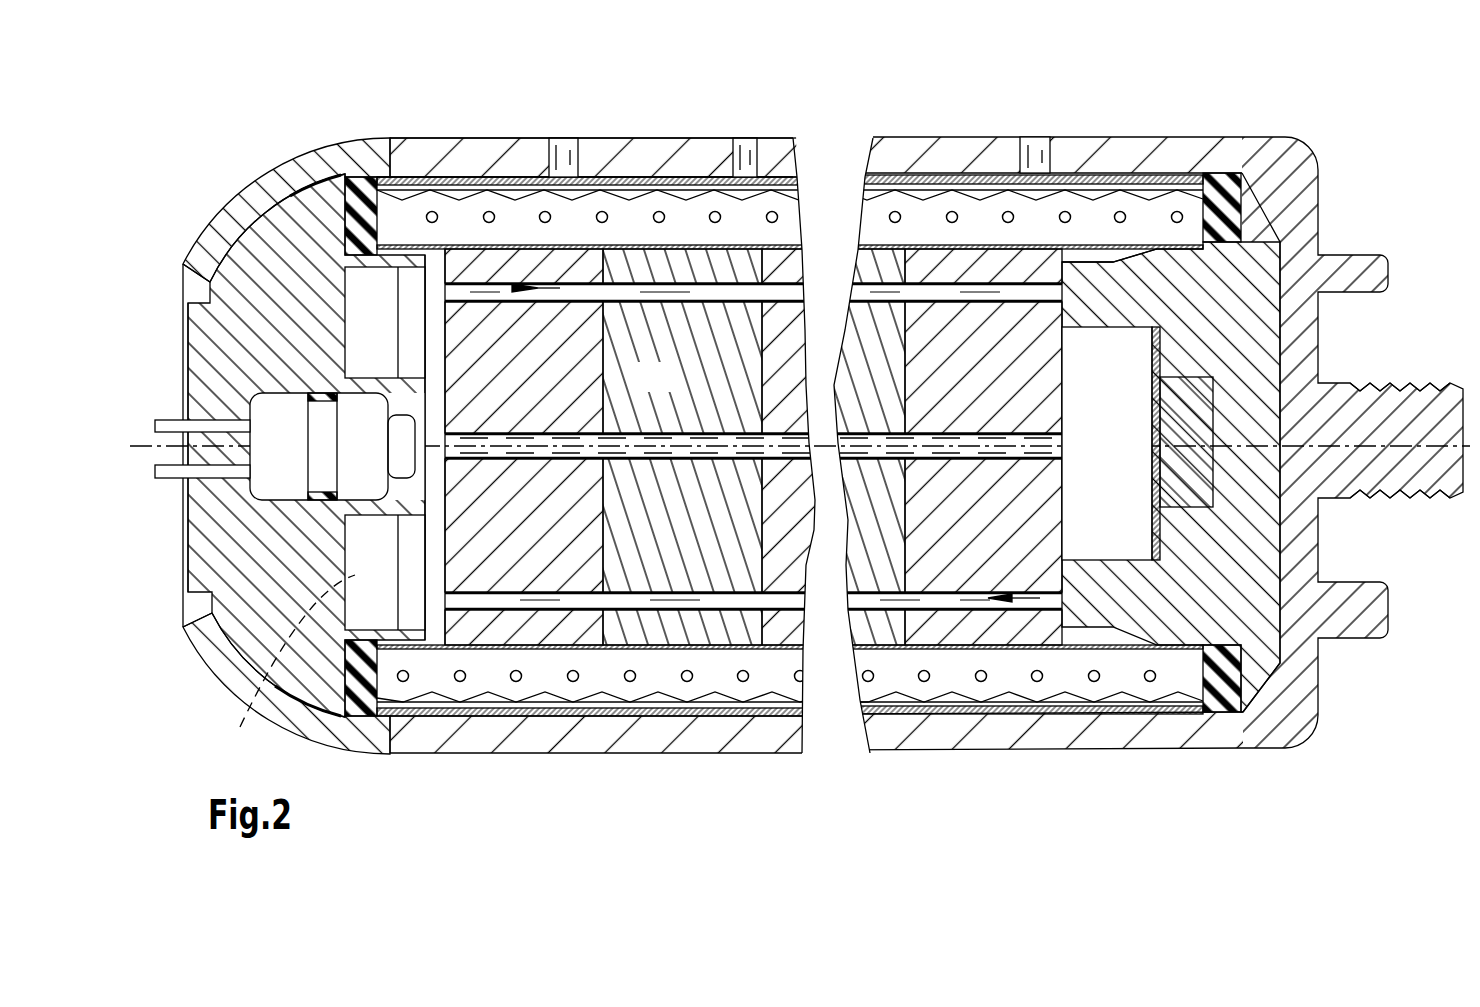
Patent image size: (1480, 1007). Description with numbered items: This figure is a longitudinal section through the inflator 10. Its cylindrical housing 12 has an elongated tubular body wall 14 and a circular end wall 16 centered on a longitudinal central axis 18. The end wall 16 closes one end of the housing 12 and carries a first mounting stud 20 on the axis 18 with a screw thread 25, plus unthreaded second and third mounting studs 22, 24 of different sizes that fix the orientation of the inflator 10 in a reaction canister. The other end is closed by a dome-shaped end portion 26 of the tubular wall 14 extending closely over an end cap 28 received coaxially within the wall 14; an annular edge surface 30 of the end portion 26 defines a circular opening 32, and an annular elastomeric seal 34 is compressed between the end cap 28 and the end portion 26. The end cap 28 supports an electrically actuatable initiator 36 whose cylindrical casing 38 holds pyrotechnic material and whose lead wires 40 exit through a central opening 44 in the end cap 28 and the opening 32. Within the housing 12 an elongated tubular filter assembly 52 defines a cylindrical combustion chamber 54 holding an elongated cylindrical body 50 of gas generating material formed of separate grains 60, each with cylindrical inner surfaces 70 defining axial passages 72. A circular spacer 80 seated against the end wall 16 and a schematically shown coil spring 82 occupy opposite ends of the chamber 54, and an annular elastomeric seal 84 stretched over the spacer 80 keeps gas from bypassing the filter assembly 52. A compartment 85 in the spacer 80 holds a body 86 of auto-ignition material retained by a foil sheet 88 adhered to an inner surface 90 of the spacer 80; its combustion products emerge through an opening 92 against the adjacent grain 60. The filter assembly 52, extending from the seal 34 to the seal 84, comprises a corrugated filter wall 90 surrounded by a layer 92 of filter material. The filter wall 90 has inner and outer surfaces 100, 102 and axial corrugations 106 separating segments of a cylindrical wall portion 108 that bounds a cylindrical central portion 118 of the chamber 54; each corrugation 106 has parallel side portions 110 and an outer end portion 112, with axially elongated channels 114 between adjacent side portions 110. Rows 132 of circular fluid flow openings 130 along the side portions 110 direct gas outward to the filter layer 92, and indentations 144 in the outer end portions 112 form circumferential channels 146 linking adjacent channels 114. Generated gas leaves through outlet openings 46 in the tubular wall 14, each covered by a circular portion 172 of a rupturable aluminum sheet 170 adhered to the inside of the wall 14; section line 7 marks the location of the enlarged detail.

The inflator 10 is at (250, 96).
The housing 12 is at (383, 136).
The tubular body wall 14 is at (770, 160).
The end wall 16 is at (1302, 340).
The longitudinal central axis 18 is at (130, 446).
The first mounting stud 20 is at (1452, 412).
The second mounting stud 22 is at (1370, 262).
The third mounting stud 24 is at (1378, 612).
The screw thread 25 is at (1448, 493).
The end portion of tubular wall 26 is at (235, 218).
The end cap 28 is at (198, 291).
The annular edge surface 30 is at (202, 620).
The circular opening 32 is at (180, 565).
The annular elastomeric seal 34 is at (352, 167).
The initiator 36 is at (438, 622).
The cylindrical casing 38 is at (267, 473).
The electrical lead wires 40 is at (172, 418).
The central opening 44 is at (180, 462).
The outlet openings 46 is at (560, 136).
The elongated cylindrical body of gas generating material 50 is at (487, 250).
The tubular filter assembly 52 is at (530, 210).
The combustion chamber 54 is at (640, 390).
The grains 60 is at (487, 627).
The cylindrical inner surfaces 70 is at (587, 302).
The cylindrical passage 72 is at (512, 289).
The circular spacer 80 is at (1097, 248).
The coil spring 82 is at (240, 727).
The annular elastomeric seal 84 is at (1222, 178).
The compartment 85 is at (1158, 467).
The body of auto-ignition material 86 is at (1165, 497).
The sheet of metal foil 88 is at (1150, 338).
The filter wall 90 is at (945, 200).
The layer of filter material 92 is at (972, 176).
The inner surface of filter wall 100 is at (1027, 248).
The outer surface of filter wall 102 is at (1020, 215).
The corrugations 106 is at (912, 180).
The cylindrical wall portion 108 is at (882, 240).
The side portions 110 is at (875, 208).
The outer end portion 112 is at (905, 182).
The axially elongated channels 114 is at (1182, 232).
The cylindrical central portion 118 is at (676, 265).
The fluid flow openings 130 is at (1121, 208).
The rows of openings 132 is at (1185, 212).
The indentations 144 is at (1113, 690).
The circumferentially extending channels 146 is at (1067, 686).
The sheet of rupturable pressure controlling material 170 is at (655, 160).
The circular portions 172 is at (572, 165).
The section line 7- 7 is at (917, 48).